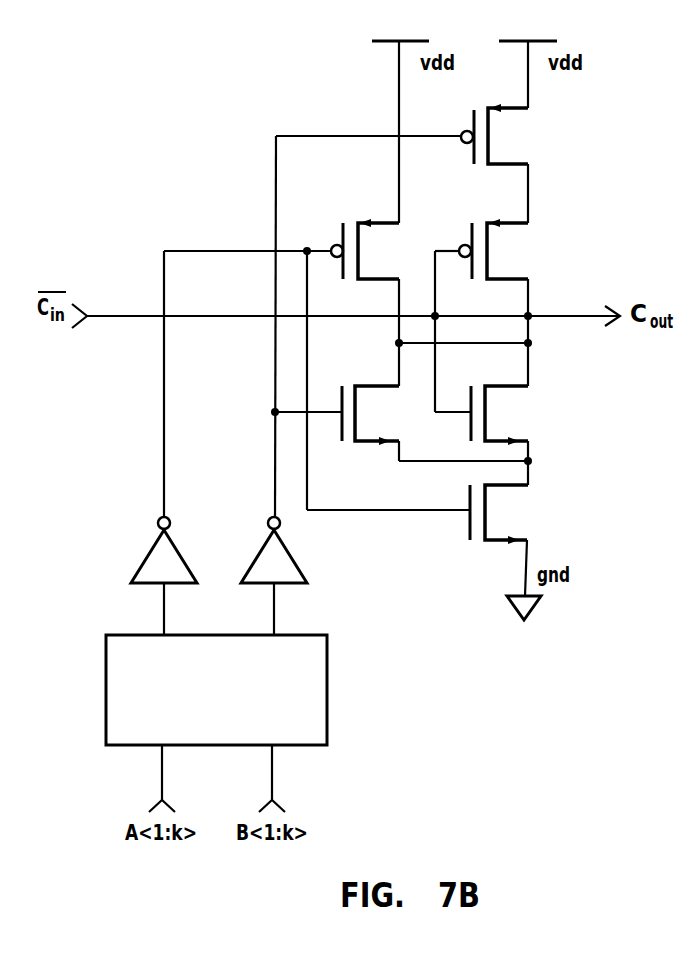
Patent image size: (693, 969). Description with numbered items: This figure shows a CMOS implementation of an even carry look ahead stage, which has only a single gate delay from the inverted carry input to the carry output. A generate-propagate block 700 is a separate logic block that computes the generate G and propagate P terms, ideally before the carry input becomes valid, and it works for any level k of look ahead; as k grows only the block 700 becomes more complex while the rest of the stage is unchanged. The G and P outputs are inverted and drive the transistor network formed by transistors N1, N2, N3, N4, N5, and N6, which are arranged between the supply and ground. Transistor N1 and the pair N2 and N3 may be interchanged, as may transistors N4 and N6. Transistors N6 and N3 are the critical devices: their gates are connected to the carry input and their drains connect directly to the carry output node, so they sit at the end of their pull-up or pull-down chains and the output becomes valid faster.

The generate-propagate block 700 is at (327, 698).
The transistor N1 is at (499, 514).
The transistor N2 is at (371, 415).
The transistor N3 is at (501, 415).
The transistor N4 is at (497, 134).
The transistor N5 is at (366, 249).
The transistor N6 is at (495, 249).